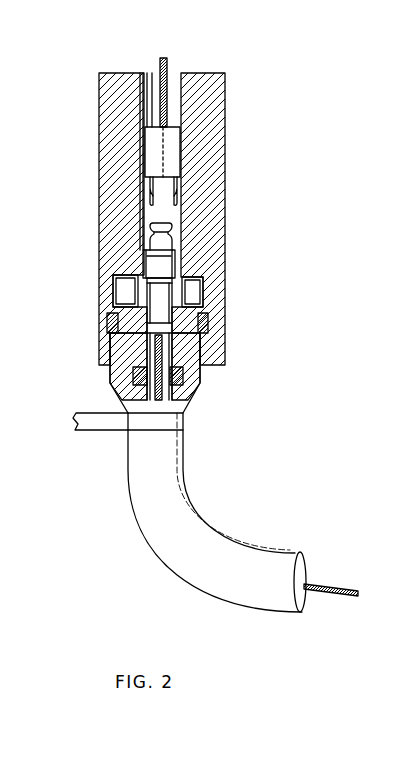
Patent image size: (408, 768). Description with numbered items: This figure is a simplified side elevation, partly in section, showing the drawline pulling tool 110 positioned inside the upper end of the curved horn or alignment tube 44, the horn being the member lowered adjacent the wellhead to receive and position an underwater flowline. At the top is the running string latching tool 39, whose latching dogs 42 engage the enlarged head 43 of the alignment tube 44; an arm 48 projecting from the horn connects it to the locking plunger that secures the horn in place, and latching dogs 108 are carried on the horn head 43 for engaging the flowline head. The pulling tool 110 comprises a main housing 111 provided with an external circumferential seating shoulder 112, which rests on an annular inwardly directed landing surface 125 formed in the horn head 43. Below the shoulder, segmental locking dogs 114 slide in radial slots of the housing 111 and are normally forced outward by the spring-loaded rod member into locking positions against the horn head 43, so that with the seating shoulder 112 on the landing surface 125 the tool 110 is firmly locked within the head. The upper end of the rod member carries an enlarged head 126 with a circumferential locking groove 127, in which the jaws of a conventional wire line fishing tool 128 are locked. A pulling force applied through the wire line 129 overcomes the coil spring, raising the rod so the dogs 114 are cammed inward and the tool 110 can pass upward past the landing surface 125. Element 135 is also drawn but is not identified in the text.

The running string latching tool 39 is at (232, 120).
The wire line 129 is at (168, 67).
The wire line fishing tool 128 is at (176, 160).
The wire line pulling tool 110 is at (165, 217).
The circumferential locking groove 127 is at (175, 238).
The enlarged head 126 is at (178, 262).
The main housing 111 is at (153, 268).
The landing surface 125 is at (155, 288).
The seating shoulder 112 is at (143, 287).
The segmental locking dogs 114 is at (183, 295).
The latching dogs 42 is at (205, 326).
The enlarged head 43 is at (200, 382).
The latching dogs 108 is at (130, 372).
The arm 48 is at (88, 430).
The alignment tube 44 is at (183, 457).
The wire 135 is at (324, 583).